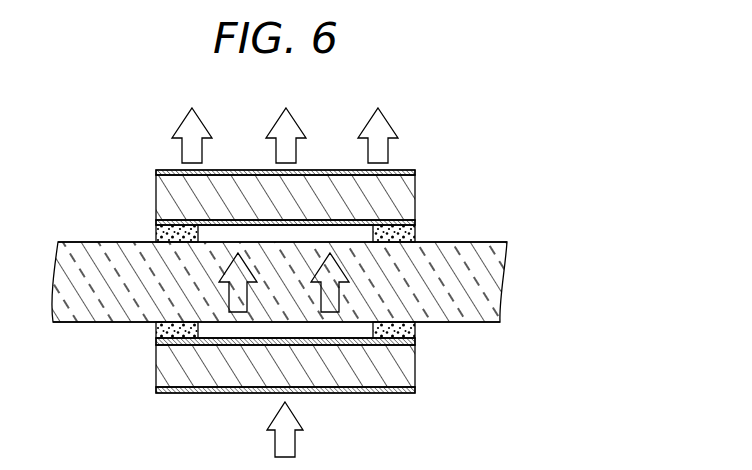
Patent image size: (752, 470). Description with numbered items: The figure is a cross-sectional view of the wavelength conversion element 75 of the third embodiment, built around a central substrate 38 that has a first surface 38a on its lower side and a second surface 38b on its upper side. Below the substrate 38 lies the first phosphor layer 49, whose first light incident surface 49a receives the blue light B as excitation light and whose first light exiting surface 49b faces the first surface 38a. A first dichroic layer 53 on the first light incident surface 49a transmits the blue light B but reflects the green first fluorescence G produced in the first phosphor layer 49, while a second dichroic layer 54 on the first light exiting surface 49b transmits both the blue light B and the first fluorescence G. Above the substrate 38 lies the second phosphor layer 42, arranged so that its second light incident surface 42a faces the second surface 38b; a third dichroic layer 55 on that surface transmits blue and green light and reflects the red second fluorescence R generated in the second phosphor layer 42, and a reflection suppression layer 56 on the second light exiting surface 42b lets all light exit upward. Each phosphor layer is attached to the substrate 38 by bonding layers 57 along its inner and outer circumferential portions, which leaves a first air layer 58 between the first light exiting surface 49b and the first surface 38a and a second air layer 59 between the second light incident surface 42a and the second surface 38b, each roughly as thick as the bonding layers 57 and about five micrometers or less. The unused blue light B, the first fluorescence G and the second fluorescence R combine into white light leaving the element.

The wavelength conversion element 75 is at (153, 138).
The second phosphor layer 42 is at (293, 172).
The second light exiting surface 42b is at (172, 173).
The second light incident surface 42a is at (157, 228).
The reflection suppression layer 56 is at (415, 172).
The third dichroic layer 55 is at (415, 222).
The bonding layers 57 is at (413, 235).
The second air layer 59 is at (322, 232).
The first air layer 58 is at (325, 334).
The substrate 38 is at (323, 286).
The second surface 38b is at (493, 242).
The first surface 38a is at (497, 323).
The first phosphor layer 49 is at (289, 395).
The first light exiting surface 49b is at (156, 340).
The first light incident surface 49a is at (168, 395).
The second dichroic layer 54 is at (415, 343).
The first dichroic layer 53 is at (415, 390).
The blue light B is at (207, 132).
The first fluorescence G is at (300, 132).
The second fluorescence R is at (394, 132).